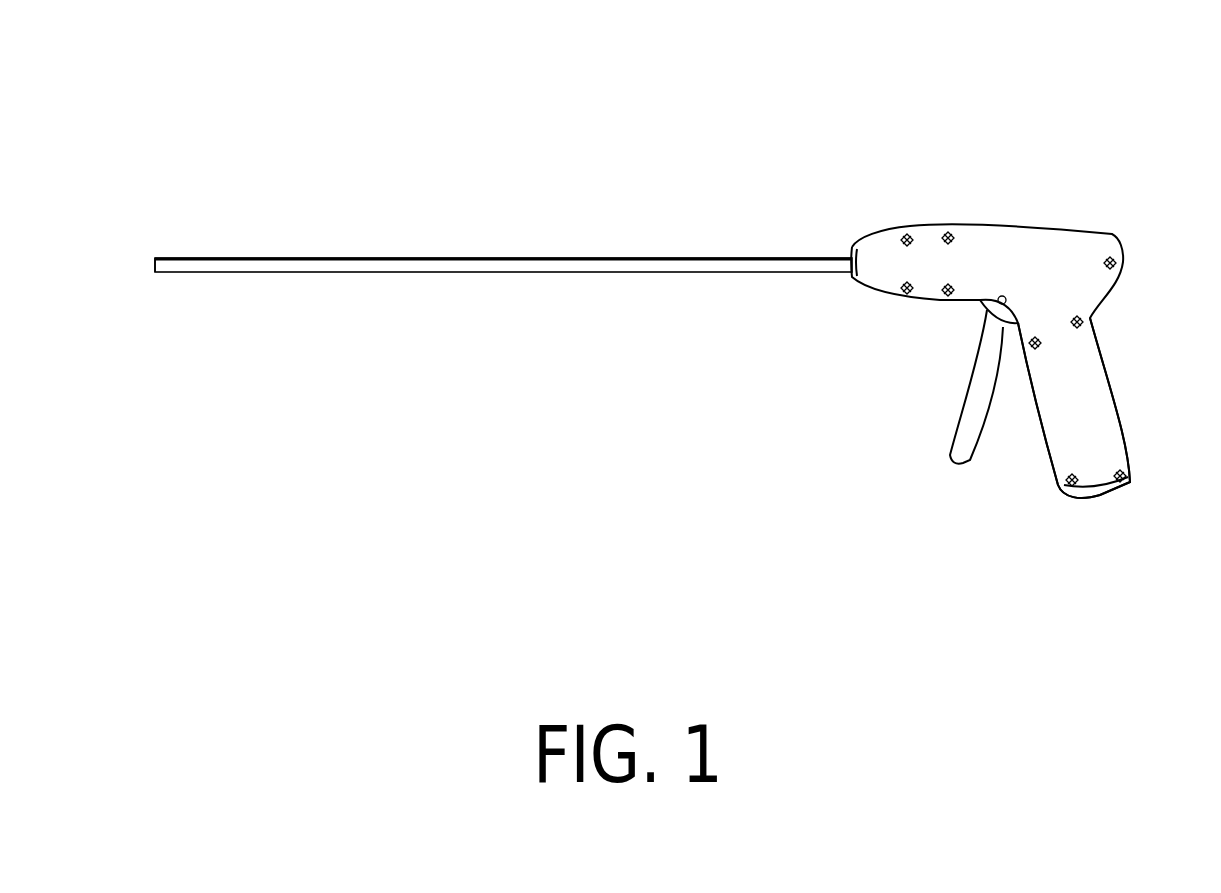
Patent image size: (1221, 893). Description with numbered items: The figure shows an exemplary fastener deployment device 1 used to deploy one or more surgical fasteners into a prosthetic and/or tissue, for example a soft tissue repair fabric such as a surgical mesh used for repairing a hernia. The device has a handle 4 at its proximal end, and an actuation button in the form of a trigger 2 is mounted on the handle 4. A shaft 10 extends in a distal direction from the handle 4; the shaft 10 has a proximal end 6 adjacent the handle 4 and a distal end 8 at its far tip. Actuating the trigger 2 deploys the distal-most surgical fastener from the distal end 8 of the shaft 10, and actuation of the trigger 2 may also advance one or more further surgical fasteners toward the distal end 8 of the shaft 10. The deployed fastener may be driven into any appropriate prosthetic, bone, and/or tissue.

The fastener deployment device 1 is at (1061, 113).
The trigger 2 is at (972, 433).
The handle 4 is at (1097, 448).
The proximal end 6 is at (841, 262).
The distal end 8 is at (165, 258).
The shaft 10 is at (558, 258).